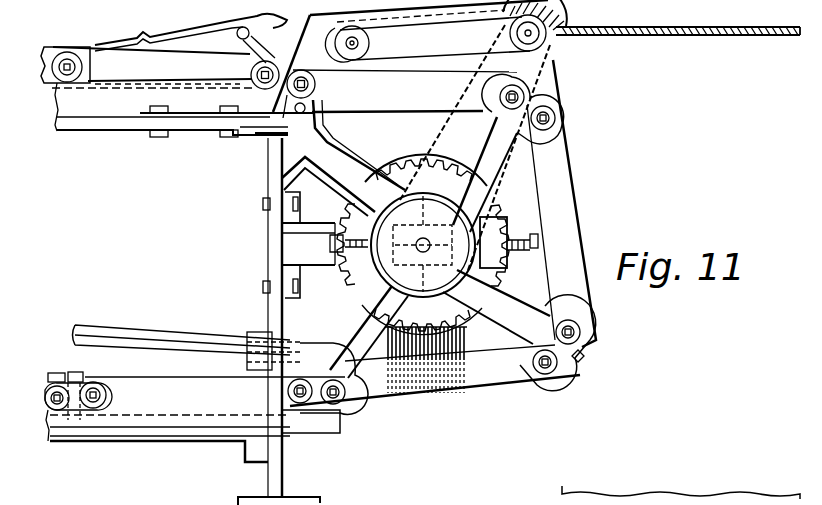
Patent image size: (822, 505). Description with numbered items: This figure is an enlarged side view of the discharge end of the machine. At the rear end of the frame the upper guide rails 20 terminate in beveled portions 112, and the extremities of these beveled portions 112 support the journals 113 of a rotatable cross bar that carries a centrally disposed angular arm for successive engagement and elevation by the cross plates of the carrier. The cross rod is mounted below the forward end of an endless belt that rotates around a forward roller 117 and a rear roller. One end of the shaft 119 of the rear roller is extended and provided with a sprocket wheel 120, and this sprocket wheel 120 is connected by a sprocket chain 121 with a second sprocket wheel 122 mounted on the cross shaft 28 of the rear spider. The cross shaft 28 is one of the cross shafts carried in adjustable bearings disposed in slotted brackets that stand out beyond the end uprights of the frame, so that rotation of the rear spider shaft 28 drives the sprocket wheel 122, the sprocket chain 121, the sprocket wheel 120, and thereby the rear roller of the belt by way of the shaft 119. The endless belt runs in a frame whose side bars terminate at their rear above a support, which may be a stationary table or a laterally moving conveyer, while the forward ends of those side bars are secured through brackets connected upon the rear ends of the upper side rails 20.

The upper guide rails 20 is at (116, 112).
The beveled portions 112 is at (242, 113).
The journals 113 is at (311, 103).
The forward roller 117 is at (371, 45).
The shaft 119 is at (570, 24).
The sprocket wheel 120 is at (551, 46).
The sprocket chain 121 is at (513, 173).
The sprocket wheel 122 is at (437, 282).
The cross shafts 28 is at (400, 268).